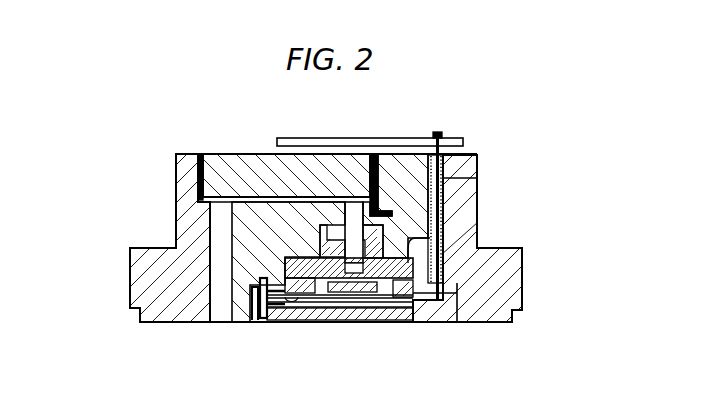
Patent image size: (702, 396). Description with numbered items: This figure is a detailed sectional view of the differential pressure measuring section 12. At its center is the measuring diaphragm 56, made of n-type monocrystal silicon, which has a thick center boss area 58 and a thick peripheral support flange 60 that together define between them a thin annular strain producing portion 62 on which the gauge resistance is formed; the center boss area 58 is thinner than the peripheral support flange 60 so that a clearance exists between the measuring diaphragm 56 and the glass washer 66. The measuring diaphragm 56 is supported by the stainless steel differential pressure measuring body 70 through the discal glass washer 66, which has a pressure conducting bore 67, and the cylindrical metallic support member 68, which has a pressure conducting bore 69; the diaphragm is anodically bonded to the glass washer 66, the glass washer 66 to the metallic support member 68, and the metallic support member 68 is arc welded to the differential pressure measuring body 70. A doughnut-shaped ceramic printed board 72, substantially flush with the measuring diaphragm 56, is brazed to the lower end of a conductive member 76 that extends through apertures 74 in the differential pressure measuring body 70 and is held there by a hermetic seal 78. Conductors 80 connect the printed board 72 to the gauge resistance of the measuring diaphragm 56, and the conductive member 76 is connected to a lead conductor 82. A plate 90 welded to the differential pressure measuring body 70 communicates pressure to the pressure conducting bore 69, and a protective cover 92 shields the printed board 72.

The differential pressure measuring section 12 is at (562, 122).
The measuring diaphragm 56 is at (376, 312).
The center boss area 58 is at (331, 300).
The peripheral support flange 60 is at (410, 296).
The annular strain producing portion 62 is at (388, 298).
The glass washer 66 is at (478, 241).
The pressure conducting bore 67 is at (353, 298).
The metallic support member 68 is at (380, 214).
The pressure conducting bore 69 is at (352, 215).
The differential pressure measuring body 70 is at (130, 268).
The printed board 72 is at (457, 287).
The apertures 74 is at (478, 157).
The conductive member 76 is at (435, 181).
The hermetic seal 78 is at (445, 203).
The conductors 80 is at (295, 300).
The lead conductor 82 is at (277, 139).
The plate 90 is at (224, 165).
The protective cover 92 is at (257, 322).